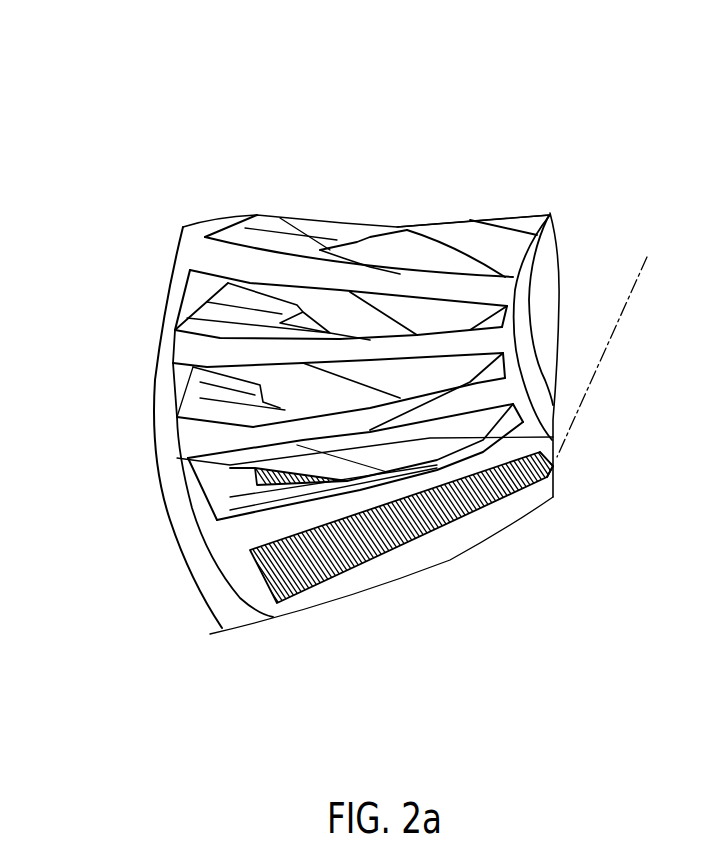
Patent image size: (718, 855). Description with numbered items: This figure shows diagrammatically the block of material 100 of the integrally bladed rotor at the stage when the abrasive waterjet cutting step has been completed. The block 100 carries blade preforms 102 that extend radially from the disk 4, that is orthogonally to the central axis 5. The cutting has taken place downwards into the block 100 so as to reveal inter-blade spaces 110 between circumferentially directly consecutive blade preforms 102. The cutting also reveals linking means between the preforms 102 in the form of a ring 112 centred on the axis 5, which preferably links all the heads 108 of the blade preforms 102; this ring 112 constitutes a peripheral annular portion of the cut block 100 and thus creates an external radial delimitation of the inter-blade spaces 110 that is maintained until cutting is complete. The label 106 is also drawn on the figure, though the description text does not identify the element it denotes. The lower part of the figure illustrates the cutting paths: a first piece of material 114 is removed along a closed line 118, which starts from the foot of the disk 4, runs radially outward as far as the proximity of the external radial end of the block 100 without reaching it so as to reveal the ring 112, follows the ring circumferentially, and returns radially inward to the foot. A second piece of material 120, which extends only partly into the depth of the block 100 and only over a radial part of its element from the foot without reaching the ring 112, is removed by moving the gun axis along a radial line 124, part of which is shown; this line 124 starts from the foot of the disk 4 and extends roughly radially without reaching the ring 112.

The block of material 100 is at (262, 118).
The blade preforms 102 is at (177, 423).
The blade 106 is at (488, 290).
The heads of blade preforms 108 is at (177, 347).
The inter-blade spaces 110 is at (413, 252).
The ring 112 is at (177, 287).
The first piece of material 114 is at (553, 473).
The closed line 118 is at (260, 583).
The second piece of material 120 is at (553, 437).
The radial line 124 is at (177, 458).
The disk 4 is at (543, 297).
The central axis 5 is at (627, 310).